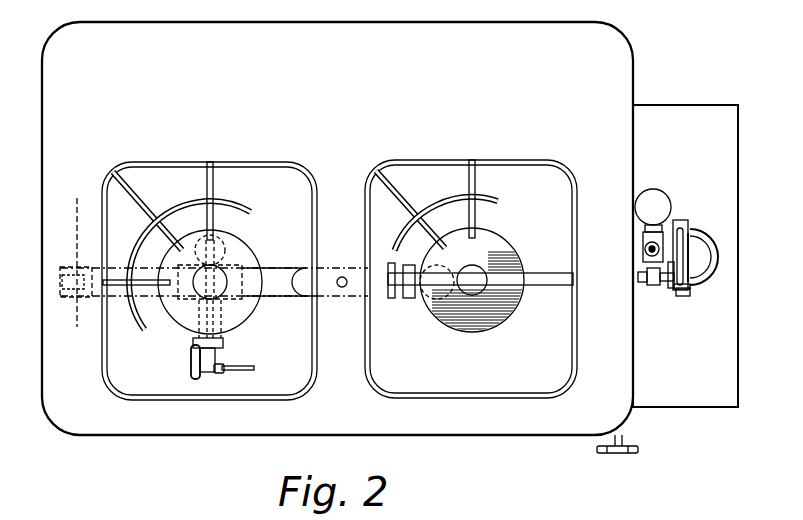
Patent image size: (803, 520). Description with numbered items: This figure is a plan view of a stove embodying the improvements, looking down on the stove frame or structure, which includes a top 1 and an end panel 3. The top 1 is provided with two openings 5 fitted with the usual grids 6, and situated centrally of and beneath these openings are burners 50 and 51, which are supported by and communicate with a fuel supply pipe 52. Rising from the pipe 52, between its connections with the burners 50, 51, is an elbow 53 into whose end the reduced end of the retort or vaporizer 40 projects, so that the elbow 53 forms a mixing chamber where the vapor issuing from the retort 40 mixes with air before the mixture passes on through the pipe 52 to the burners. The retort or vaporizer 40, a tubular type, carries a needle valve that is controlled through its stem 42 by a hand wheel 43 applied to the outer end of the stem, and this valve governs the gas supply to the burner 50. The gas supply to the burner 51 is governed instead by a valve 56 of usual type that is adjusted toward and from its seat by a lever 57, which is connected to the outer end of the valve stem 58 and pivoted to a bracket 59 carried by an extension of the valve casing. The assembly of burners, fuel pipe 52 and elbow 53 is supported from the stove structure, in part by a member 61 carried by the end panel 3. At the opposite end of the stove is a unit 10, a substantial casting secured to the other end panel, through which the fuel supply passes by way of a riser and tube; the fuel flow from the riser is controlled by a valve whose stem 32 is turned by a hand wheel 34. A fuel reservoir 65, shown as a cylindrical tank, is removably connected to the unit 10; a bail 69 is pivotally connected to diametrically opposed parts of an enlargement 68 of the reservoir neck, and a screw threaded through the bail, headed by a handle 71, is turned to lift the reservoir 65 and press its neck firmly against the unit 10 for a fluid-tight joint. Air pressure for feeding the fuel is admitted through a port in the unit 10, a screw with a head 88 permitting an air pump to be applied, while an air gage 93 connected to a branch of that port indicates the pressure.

The top 1 is at (620, 69).
The end panel 3 is at (76, 228).
The openings 5 is at (271, 168).
The grids 6 is at (155, 164).
The unit 10 is at (640, 265).
The valve stem 32 is at (624, 441).
The hand wheel 34 is at (640, 452).
The retort or vaporizer 40 is at (548, 290).
The stem 42 is at (663, 290).
The hand wheel 43 is at (678, 297).
The burner 50 is at (512, 259).
The burner 51 is at (245, 258).
The fuel supply pipe 52 is at (214, 282).
The elbow 53 is at (303, 300).
The valve 56 is at (240, 303).
The lever 57 is at (251, 371).
The valve stem 58 is at (222, 357).
The bracket 59 is at (191, 361).
The member 61 is at (90, 300).
The fuel reservoir 65 is at (685, 256).
The enlargement 68 is at (701, 270).
The bail 69 is at (691, 294).
The handle 71 is at (700, 237).
The head 88 is at (644, 246).
The air gage 93 is at (655, 200).